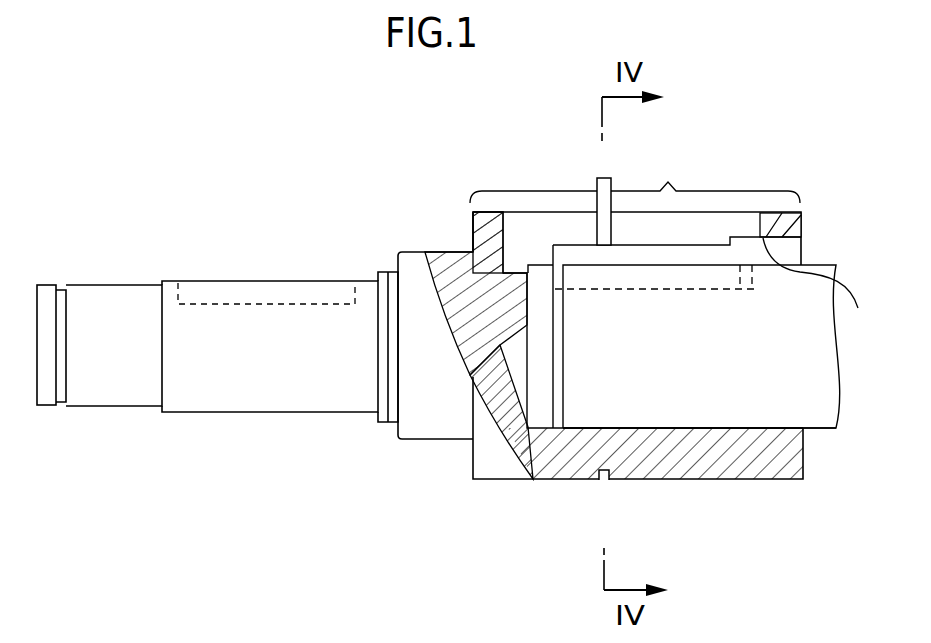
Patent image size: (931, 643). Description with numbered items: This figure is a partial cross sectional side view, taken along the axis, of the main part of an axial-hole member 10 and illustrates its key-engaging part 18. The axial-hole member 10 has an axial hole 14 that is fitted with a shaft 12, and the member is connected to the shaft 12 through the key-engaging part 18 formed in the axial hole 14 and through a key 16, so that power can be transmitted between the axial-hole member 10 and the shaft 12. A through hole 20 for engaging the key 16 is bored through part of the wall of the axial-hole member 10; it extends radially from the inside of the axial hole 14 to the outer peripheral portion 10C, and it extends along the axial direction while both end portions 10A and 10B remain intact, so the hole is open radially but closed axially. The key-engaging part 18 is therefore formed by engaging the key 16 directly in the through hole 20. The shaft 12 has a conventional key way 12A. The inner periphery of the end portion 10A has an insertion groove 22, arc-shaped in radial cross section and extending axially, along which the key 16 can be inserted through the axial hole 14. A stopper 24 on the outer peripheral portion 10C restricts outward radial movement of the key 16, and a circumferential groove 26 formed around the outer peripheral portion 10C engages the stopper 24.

The axial-hole member 10 is at (741, 500).
The end portion 10A is at (803, 222).
The end portion 10B is at (468, 222).
The outer peripheral portion 10C is at (486, 211).
The shaft 12 is at (812, 431).
The key way 12A is at (658, 287).
The axial hole 14 is at (758, 427).
The key 16 is at (643, 246).
The key-engaging part 18 is at (635, 174).
The through hole 20 is at (492, 234).
The insertion groove 22 is at (820, 290).
The stopper 24 is at (603, 177).
The circumferential groove 26 is at (604, 480).